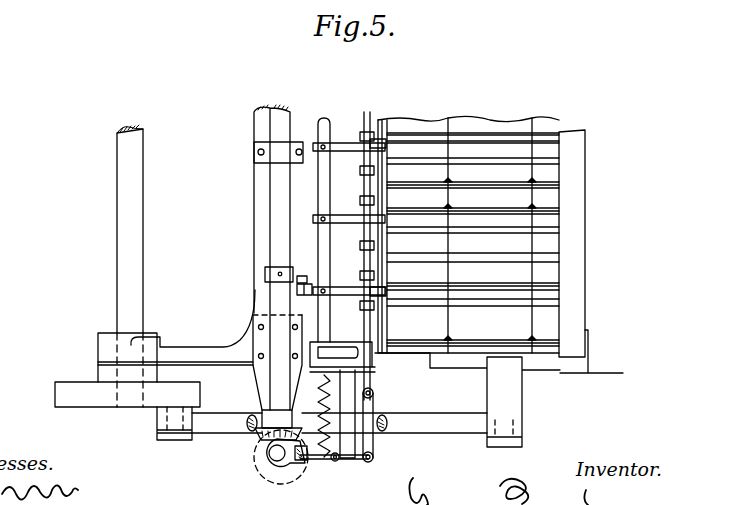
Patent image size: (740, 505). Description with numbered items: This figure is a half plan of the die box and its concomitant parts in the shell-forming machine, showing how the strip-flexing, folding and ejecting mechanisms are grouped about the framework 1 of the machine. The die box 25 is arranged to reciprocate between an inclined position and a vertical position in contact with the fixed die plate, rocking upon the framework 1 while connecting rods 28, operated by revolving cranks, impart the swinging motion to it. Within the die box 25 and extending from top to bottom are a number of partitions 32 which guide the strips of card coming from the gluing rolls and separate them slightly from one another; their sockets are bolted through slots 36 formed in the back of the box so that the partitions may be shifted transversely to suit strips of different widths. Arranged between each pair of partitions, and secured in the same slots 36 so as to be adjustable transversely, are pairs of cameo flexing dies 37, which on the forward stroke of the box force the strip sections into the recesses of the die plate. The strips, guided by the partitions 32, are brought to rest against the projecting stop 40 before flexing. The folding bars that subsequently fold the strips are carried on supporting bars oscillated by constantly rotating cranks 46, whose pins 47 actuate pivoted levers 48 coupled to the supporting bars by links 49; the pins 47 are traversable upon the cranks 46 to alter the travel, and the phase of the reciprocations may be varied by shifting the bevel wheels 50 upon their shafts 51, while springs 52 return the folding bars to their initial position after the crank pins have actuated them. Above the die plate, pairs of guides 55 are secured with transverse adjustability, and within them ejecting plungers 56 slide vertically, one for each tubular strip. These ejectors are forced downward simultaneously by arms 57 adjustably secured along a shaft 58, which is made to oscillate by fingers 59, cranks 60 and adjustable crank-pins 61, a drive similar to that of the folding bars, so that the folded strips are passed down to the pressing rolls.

The framework 1 is at (254, 221).
The die box 25 is at (585, 253).
The connecting rods 28 is at (424, 418).
The partitions 32 is at (517, 186).
The slots 36 is at (528, 201).
The cameo flexing dies 37 is at (470, 214).
The projecting stop 40 is at (386, 330).
The cranks 46 is at (291, 466).
The pins 47 is at (303, 462).
The pivoted levers 48 is at (366, 463).
The links 49 is at (374, 394).
The bevel wheels 50 is at (263, 470).
The shafts 51 is at (269, 454).
The springs 52 is at (286, 424).
The guides 55 is at (364, 188).
The ejecting plungers 56 is at (363, 224).
The arms 57 is at (352, 143).
The shaft 58 is at (319, 197).
The fingers 59 is at (309, 297).
The cranks 60 is at (265, 277).
The adjustable crank-pins 61 is at (302, 275).